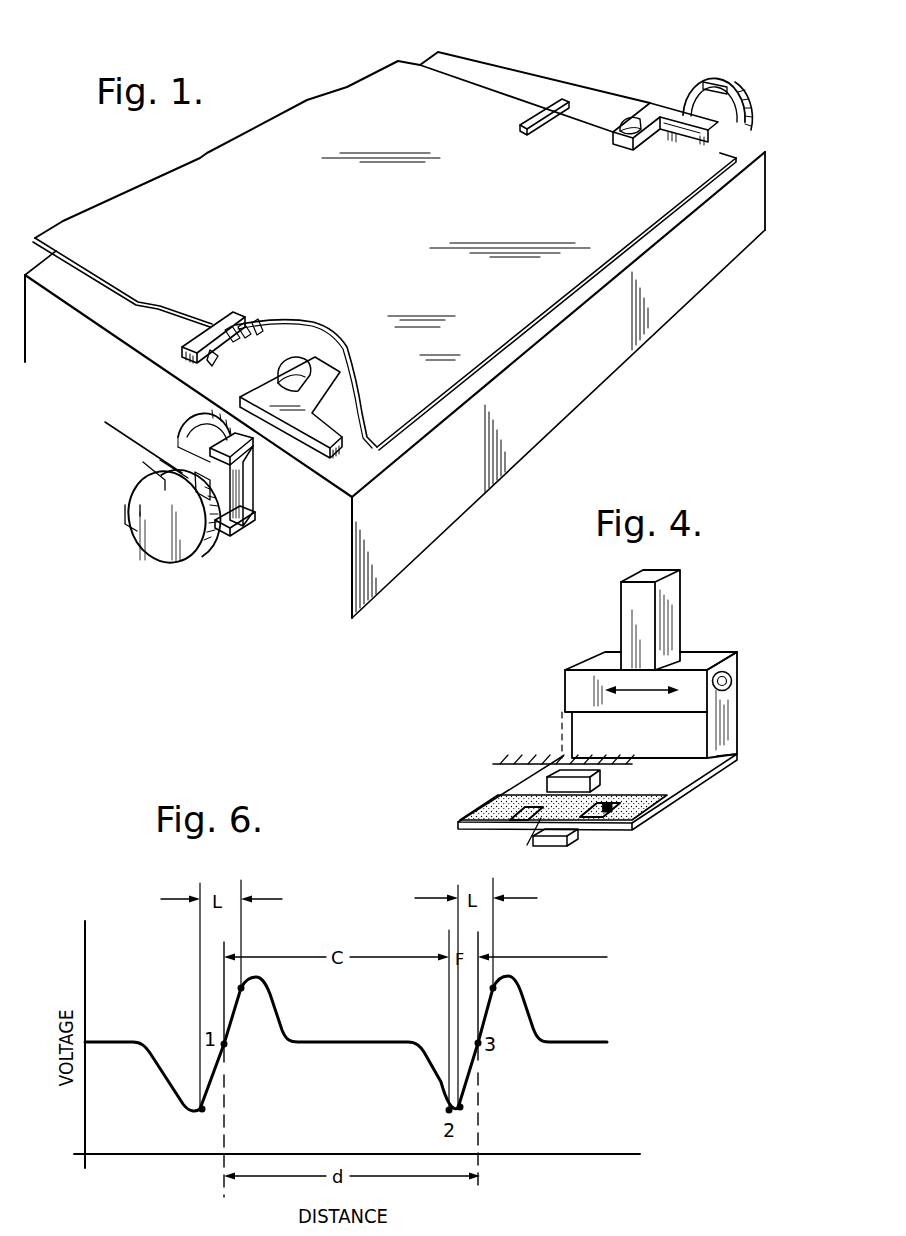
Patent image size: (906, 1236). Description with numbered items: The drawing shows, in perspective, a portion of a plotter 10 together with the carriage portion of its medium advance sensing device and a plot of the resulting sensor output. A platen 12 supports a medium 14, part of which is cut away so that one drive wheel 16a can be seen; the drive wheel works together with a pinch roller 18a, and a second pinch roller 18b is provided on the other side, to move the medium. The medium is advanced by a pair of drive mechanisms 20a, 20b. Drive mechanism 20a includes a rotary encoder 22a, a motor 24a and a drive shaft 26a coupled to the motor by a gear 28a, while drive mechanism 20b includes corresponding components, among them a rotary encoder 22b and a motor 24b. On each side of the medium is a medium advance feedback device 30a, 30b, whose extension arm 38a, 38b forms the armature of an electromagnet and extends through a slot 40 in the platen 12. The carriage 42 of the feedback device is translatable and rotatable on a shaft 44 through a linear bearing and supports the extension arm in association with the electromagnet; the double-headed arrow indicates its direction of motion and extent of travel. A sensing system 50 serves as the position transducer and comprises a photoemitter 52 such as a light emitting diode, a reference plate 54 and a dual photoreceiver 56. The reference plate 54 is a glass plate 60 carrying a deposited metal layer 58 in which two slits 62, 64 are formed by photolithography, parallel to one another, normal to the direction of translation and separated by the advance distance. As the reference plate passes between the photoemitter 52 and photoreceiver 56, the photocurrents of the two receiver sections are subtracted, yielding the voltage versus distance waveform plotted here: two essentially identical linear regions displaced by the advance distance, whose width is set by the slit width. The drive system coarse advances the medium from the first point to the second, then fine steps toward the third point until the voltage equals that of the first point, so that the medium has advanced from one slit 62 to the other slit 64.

In FIG. 1, the plotter 10 is at (408, 345).
In FIG. 1, the platen 12 is at (83, 300).
In FIG. 1, the medium 14 is at (361, 211).
In FIG. 1, the drive wheel 16a is at (313, 391).
In FIG. 1, the pinch roller 18a is at (291, 361).
In FIG. 1, the pinch roller 18b is at (628, 117).
In FIG. 1, the drive mechanism 20a is at (170, 505).
In FIG. 1, the drive mechanism 20b is at (702, 83).
In FIG. 1, the rotary encoder 22a is at (173, 568).
In FIG. 1, the rotary encoder 22b is at (737, 97).
In FIG. 1, the motor 24a is at (235, 536).
In FIG. 1, the motor 24b is at (688, 105).
In FIG. 1, the drive shaft 26a is at (188, 462).
In FIG. 1, the gear 28a is at (188, 427).
In FIG. 1, the medium advance feedback device 30a is at (231, 326).
In FIG. 1, the medium advance feedback device 30b is at (514, 145).
In FIG. 1, the extension arm 38a is at (236, 313).
In FIG. 1, the extension arm 38b is at (520, 125).
In FIG. 1, the slot 40 is at (214, 366).
In FIG. 4, the carriage 42 is at (672, 664).
In FIG. 4, the shaft 44 is at (733, 673).
In FIG. 4, the sensing system 50 is at (614, 685).
In FIG. 4, the photoemitter 52 is at (557, 790).
In FIG. 4, the reference plate 54 is at (527, 814).
In FIG. 4, the photoreceiver 56 is at (566, 847).
In FIG. 4, the metal layer 58 is at (628, 810).
In FIG. 4, the glass plate 60 is at (645, 820).
In FIG. 4, the slit 62 is at (517, 829).
In FIG. 4, the slit 64 is at (582, 825).